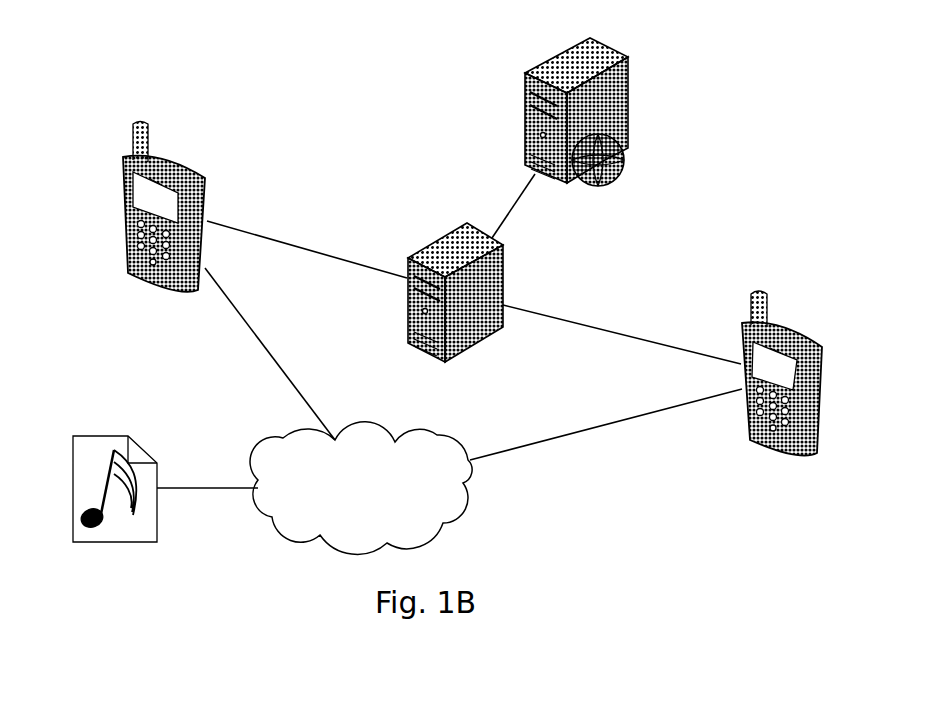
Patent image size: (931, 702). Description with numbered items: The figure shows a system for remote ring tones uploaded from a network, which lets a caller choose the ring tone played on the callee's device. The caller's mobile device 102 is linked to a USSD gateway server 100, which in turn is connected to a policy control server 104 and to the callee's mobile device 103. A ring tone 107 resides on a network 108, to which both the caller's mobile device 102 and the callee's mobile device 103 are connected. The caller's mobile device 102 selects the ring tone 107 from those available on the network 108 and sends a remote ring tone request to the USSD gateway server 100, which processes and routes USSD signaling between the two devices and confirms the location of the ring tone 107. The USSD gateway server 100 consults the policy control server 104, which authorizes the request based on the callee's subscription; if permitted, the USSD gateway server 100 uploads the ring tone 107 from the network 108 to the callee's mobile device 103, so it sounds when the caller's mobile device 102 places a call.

The USSD gateway server 100 is at (438, 240).
The caller's mobile device 102 is at (190, 171).
The callee's mobile device 103 is at (748, 437).
The policy control server 104 is at (538, 63).
The ring tone 107 is at (117, 436).
The network 108 is at (435, 435).